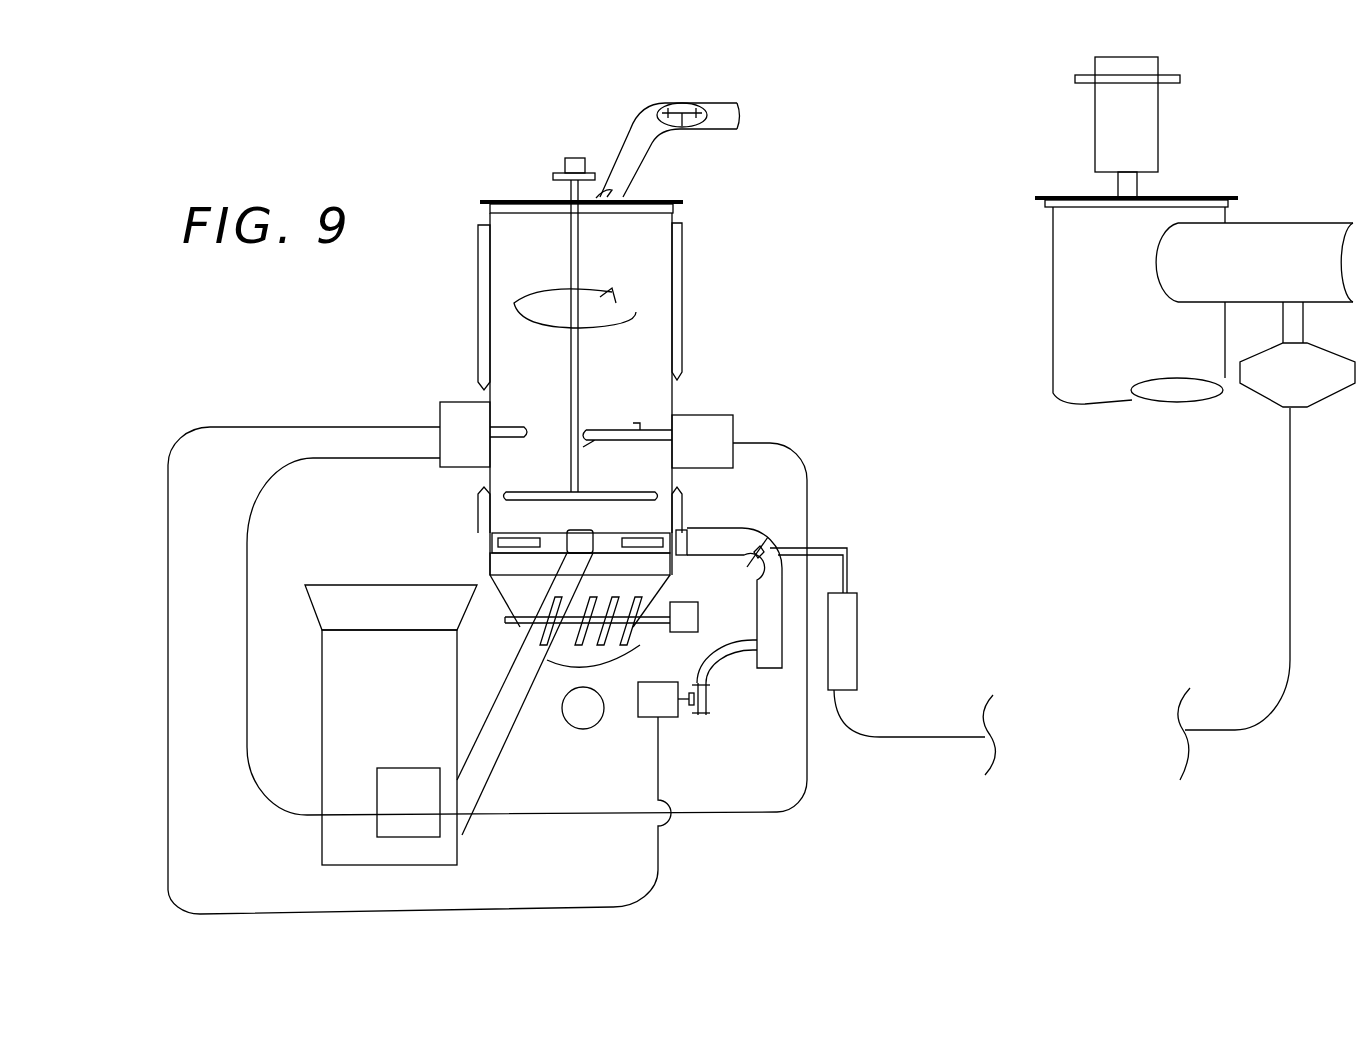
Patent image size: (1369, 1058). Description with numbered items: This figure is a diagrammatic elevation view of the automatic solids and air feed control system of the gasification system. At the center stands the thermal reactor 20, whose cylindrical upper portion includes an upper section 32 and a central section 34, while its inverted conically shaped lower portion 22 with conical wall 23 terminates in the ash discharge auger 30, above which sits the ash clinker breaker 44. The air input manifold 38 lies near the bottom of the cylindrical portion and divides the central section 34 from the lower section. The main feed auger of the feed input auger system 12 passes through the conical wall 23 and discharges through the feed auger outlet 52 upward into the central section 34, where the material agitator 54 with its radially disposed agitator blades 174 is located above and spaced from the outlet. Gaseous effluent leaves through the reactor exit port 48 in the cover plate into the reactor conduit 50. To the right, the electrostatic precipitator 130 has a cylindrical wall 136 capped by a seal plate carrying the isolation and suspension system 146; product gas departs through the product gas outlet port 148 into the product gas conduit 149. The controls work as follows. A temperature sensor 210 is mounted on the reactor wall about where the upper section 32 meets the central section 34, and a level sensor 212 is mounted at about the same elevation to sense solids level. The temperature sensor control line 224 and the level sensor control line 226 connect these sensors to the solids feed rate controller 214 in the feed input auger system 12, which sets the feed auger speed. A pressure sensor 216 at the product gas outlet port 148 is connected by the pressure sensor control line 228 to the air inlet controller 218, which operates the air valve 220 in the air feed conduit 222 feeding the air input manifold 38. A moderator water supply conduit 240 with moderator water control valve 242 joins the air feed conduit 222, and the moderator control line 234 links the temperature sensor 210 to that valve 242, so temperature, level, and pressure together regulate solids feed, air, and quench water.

The feed input auger system 12 is at (321, 775).
The thermal reactor 20 is at (676, 212).
The inverted conically shaped lower portion 22 is at (566, 690).
The conical wall 23 is at (520, 628).
The ash discharge auger 30 is at (588, 718).
The upper section 32 is at (648, 390).
The central section 34 is at (642, 483).
The air input manifold 38 is at (497, 540).
The ash clinker breaker 44 is at (623, 640).
The reactor exit port 48 is at (608, 193).
The reactor conduit 50 is at (631, 145).
The feed auger outlet 52 is at (580, 529).
The material agitator 54 is at (570, 257).
The electrostatic precipitator 130 is at (1050, 375).
The cylindrical wall 136 is at (1052, 257).
The isolation and suspension system 146 is at (1145, 150).
The product gas outlet port 148 is at (1165, 263).
The product gas conduit 149 is at (1267, 240).
The agitator blades 174 is at (682, 556).
The temperature sensor 210 is at (452, 414).
The level sensor 212 is at (695, 427).
The solids feed rate controller 214 is at (428, 818).
The pressure sensor 216 is at (1318, 397).
The air inlet controller 218 is at (857, 648).
The air valve 220 is at (790, 512).
The air feed conduit 222 is at (708, 537).
The temperature sensor control line 224 is at (247, 620).
The level sensor control line 226 is at (808, 477).
The pressure sensor control line 228 is at (882, 732).
The moderator control line 234 is at (167, 600).
The moderator water supply conduit 240 is at (735, 650).
The moderator water control valve 242 is at (667, 708).